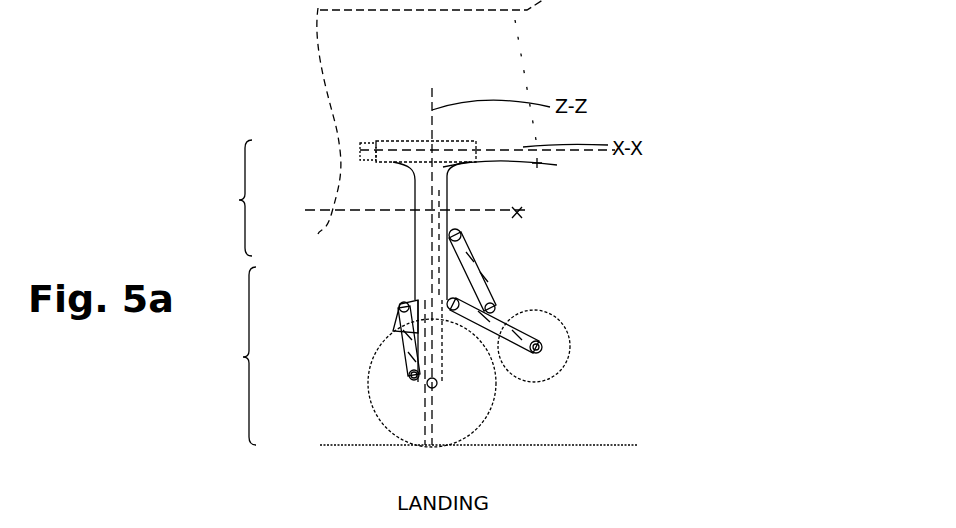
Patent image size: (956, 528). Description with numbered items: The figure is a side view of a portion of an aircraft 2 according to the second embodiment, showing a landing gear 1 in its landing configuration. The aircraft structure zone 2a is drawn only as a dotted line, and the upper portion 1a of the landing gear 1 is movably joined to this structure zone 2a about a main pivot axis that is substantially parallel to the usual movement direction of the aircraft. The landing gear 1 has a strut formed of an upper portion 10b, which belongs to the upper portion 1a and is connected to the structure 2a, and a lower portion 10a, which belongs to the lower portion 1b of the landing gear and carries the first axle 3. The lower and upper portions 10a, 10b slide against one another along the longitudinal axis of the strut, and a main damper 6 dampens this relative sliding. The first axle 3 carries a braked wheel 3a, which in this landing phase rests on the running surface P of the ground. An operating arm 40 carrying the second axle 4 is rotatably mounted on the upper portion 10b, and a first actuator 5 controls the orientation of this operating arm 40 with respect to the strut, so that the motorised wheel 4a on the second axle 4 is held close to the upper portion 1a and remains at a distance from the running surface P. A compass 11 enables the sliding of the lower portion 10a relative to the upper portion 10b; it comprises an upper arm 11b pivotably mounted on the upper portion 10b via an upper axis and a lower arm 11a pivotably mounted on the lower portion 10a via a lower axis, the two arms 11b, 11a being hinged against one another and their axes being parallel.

The landing gear 1 is at (410, 145).
The upper portion 1a is at (222, 198).
The lower portion 1b is at (224, 356).
The aircraft 2 is at (487, 66).
The aircraft structure zone 2a is at (513, 215).
The first axle 3 is at (432, 380).
The braked wheel 3a is at (443, 423).
The second axle 4 is at (542, 344).
The motorised wheel 4a is at (538, 376).
The first actuator 5 is at (470, 250).
The main damper 6 is at (510, 164).
The lower portion of the strut 10a is at (442, 358).
The upper portion of the strut 10b is at (447, 193).
The compass 11 is at (397, 332).
The lower arm 11a is at (393, 363).
The upper arm 11b is at (410, 305).
The operating arm 40 is at (498, 322).
The running surface P is at (595, 446).